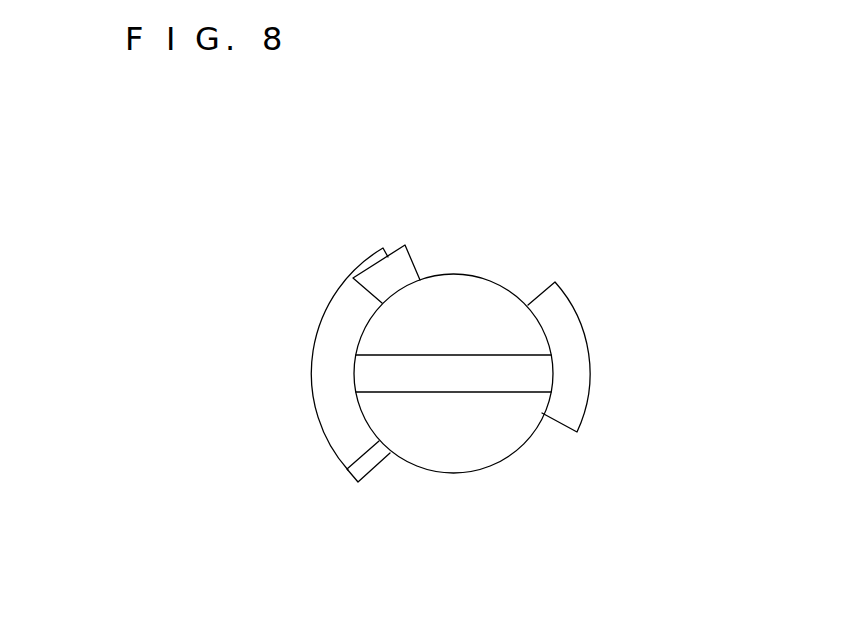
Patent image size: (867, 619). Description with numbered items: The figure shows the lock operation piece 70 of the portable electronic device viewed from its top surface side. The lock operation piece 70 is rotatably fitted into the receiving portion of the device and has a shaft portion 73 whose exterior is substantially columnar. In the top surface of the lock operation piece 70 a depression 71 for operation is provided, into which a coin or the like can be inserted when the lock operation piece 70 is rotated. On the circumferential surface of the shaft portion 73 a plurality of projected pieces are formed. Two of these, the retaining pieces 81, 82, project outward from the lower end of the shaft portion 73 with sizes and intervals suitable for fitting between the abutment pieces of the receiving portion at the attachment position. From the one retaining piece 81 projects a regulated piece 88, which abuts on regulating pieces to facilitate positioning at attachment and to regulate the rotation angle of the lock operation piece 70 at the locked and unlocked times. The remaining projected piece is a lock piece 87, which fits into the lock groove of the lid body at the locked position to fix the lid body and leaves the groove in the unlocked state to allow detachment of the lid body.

The lock operation piece 70 is at (598, 136).
The depression for operation 71 is at (498, 378).
The shaft portion 73 is at (478, 276).
The retaining piece 81 is at (327, 348).
The retaining piece 82 is at (570, 342).
The lock piece 87 is at (394, 268).
The regulated piece 88 is at (357, 465).